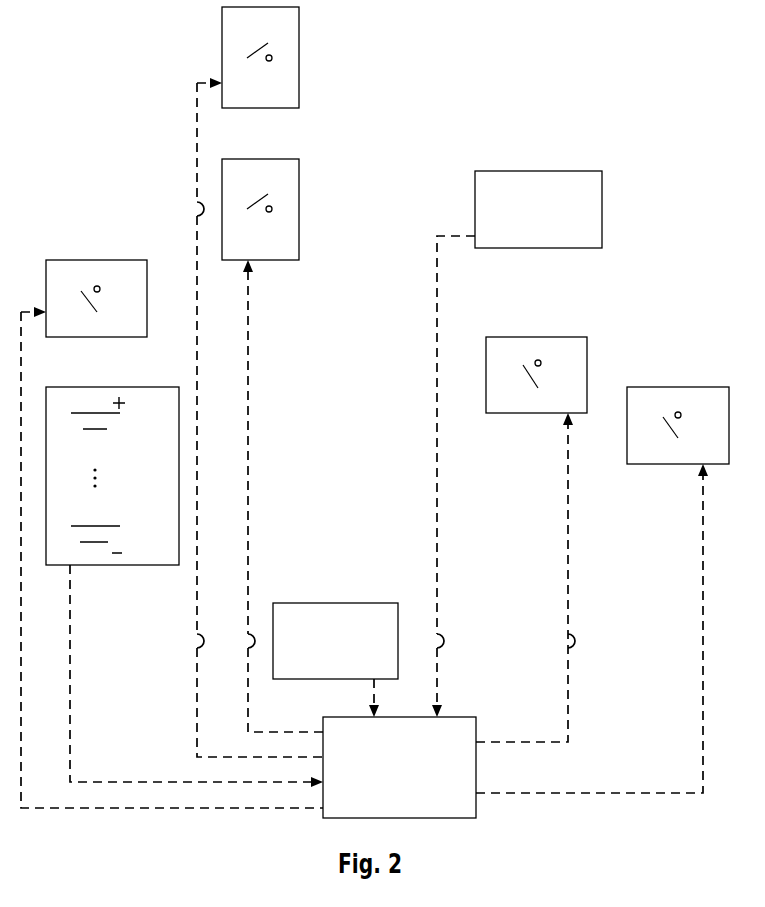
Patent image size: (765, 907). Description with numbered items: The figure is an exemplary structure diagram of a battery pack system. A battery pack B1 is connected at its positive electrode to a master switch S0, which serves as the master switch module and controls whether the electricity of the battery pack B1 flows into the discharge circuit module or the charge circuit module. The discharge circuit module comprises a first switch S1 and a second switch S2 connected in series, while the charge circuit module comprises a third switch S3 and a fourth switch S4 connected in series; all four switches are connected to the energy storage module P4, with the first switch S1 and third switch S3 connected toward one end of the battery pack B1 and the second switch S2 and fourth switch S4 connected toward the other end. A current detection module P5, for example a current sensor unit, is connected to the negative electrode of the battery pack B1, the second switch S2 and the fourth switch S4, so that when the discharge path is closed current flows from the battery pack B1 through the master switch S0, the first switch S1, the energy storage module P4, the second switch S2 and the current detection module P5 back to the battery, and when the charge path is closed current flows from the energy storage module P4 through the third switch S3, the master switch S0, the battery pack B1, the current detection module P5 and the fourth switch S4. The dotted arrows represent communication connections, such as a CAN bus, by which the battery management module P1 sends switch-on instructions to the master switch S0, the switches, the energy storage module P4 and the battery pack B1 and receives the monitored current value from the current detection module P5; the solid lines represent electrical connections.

The master switch S0 is at (96, 298).
The first switch S1 is at (260, 209).
The second switch S2 is at (536, 375).
The third switch S3 is at (260, 57).
The fourth switch S4 is at (678, 425).
The battery pack B1 is at (113, 476).
The battery management module P1 is at (399, 767).
The energy storage module P4 is at (538, 208).
The current detection module P5 is at (335, 639).